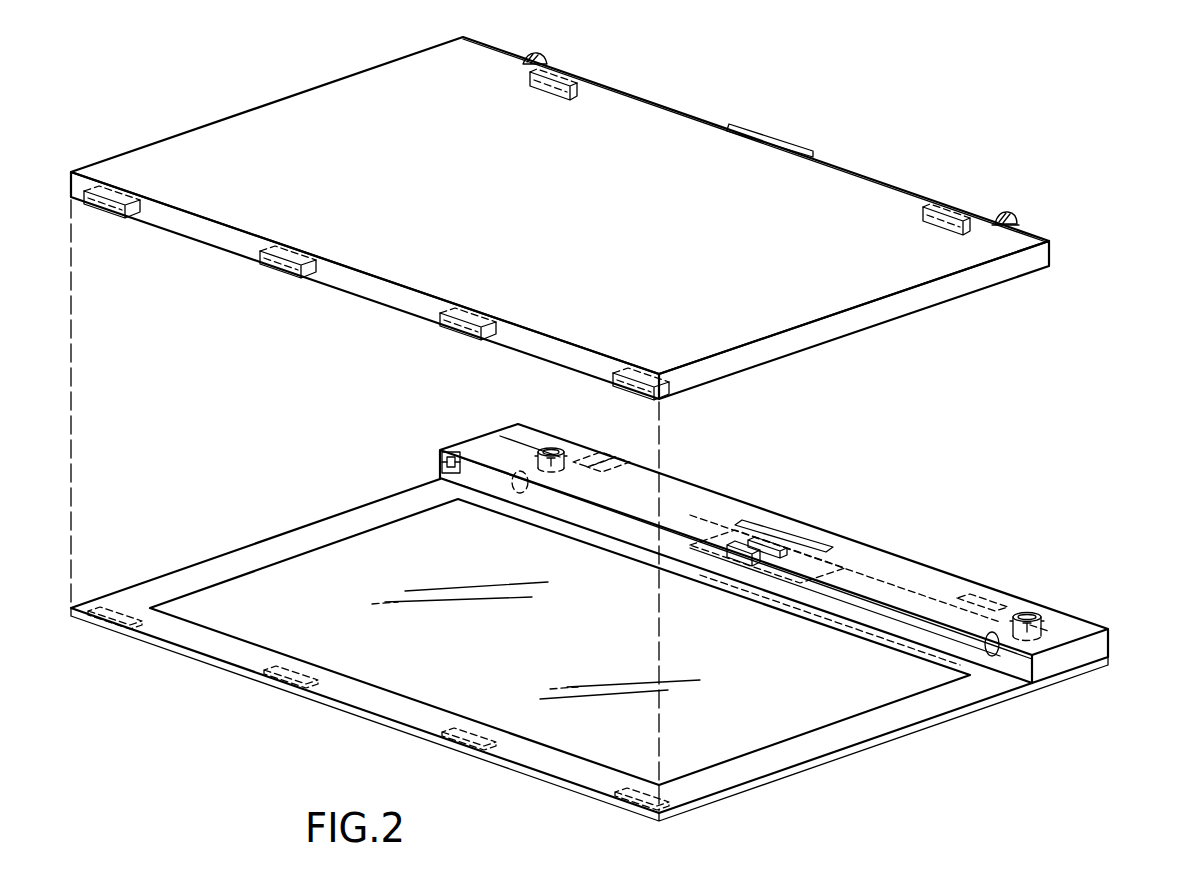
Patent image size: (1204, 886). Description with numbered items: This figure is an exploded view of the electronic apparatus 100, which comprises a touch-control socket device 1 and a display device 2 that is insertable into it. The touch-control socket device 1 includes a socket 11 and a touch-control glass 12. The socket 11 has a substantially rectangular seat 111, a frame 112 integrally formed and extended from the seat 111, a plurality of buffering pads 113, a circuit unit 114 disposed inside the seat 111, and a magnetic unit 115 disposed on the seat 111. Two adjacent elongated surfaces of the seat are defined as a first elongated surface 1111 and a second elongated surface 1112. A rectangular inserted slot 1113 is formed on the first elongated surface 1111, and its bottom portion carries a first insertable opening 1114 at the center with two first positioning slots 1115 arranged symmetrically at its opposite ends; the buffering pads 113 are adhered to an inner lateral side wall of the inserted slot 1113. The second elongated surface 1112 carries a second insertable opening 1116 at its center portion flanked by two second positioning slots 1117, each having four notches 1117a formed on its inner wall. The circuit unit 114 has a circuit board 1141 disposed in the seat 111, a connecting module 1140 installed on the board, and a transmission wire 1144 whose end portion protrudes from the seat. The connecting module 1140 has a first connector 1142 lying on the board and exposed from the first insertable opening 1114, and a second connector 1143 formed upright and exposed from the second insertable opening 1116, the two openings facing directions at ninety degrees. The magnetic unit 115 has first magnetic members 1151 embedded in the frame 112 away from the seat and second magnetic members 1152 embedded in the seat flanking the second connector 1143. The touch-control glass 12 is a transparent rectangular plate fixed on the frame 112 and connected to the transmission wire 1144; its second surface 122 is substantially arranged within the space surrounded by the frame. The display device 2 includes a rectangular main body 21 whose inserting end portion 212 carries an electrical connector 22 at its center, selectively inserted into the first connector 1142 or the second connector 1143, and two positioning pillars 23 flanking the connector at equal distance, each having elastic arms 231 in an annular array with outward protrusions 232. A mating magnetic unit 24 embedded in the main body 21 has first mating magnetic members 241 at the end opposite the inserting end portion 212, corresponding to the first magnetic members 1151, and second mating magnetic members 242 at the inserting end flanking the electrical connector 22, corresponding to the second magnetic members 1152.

The electronic apparatus 100 is at (1107, 57).
The touch-control socket device 1 is at (618, 594).
The display device 2 is at (629, 406).
The socket 11 is at (602, 622).
The seat 111 is at (782, 580).
The frame 112 is at (958, 698).
The touch-control glass 12 is at (545, 625).
The second surface 122 is at (243, 606).
The buffering pads 113 is at (409, 420).
The first elongated surface 1111 is at (440, 480).
The second elongated surface 1112 is at (527, 442).
The inserted slot 1113 is at (474, 466).
The first insertable opening 1114 is at (728, 564).
The first positioning slots 1115 is at (516, 488).
The second insertable opening 1116 is at (803, 548).
The second positioning slots 1117 is at (1034, 609).
The notches 1117a is at (1046, 627).
The circuit unit 114 is at (880, 508).
The connecting module 1140 is at (825, 540).
The circuit board 1141 is at (1009, 544).
The first connector 1142 is at (768, 530).
The second connector 1143 is at (820, 530).
The transmission wire 1144 is at (927, 593).
The magnetic unit 115 is at (428, 566).
The first magnetic members 1151 is at (98, 623).
The second magnetic members 1152 is at (610, 458).
The main body 21 is at (727, 52).
The inserting end portion 212 is at (662, 104).
The electrical connector 22 is at (775, 137).
The positioning pillars 23 is at (855, 155).
The elastic arms 231 is at (1015, 218).
The protrusions 232 is at (1065, 233).
The mating magnetic unit 24 is at (543, 234).
The first mating magnetic members 241 is at (280, 266).
The second mating magnetic members 242 is at (1003, 143).